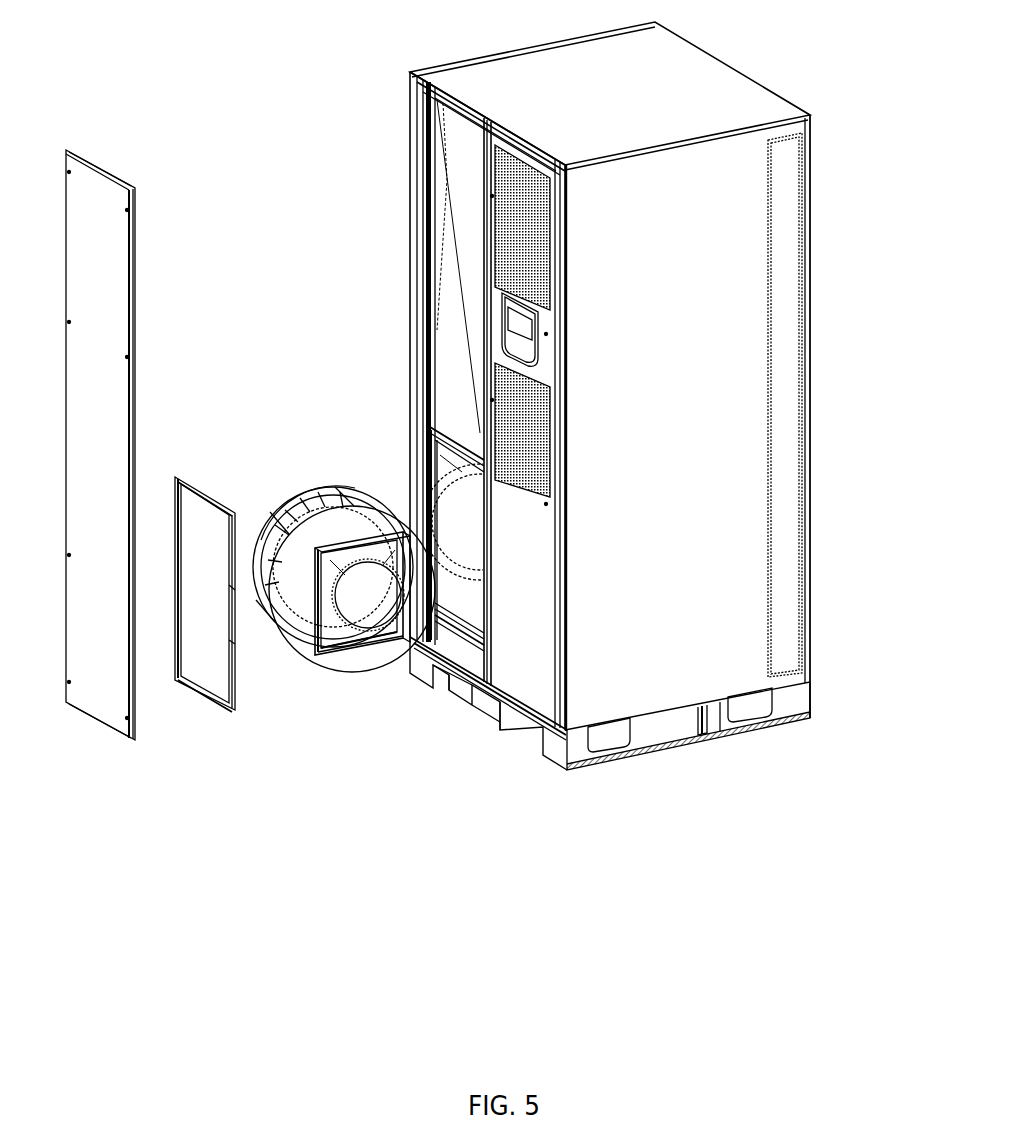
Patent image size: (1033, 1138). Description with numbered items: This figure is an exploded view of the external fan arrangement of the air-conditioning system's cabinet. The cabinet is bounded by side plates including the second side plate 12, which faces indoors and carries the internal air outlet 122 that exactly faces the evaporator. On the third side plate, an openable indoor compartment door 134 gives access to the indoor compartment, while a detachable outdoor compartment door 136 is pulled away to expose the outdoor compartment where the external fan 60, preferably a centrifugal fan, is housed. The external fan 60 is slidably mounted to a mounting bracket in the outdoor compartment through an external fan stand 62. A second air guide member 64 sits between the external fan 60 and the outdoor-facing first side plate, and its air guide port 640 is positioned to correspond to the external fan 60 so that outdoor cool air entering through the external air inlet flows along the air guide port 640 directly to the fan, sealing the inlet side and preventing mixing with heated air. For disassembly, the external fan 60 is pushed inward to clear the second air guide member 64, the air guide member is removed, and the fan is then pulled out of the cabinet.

The second side plate 12 is at (732, 435).
The internal air outlet 122 is at (778, 258).
The indoor compartment door 134 is at (518, 662).
The outdoor compartment door 136 is at (108, 698).
The external fan 60 is at (275, 643).
The external fan stand 62 is at (368, 645).
The second air guide member 64 is at (437, 440).
The air guide port 640 is at (455, 500).